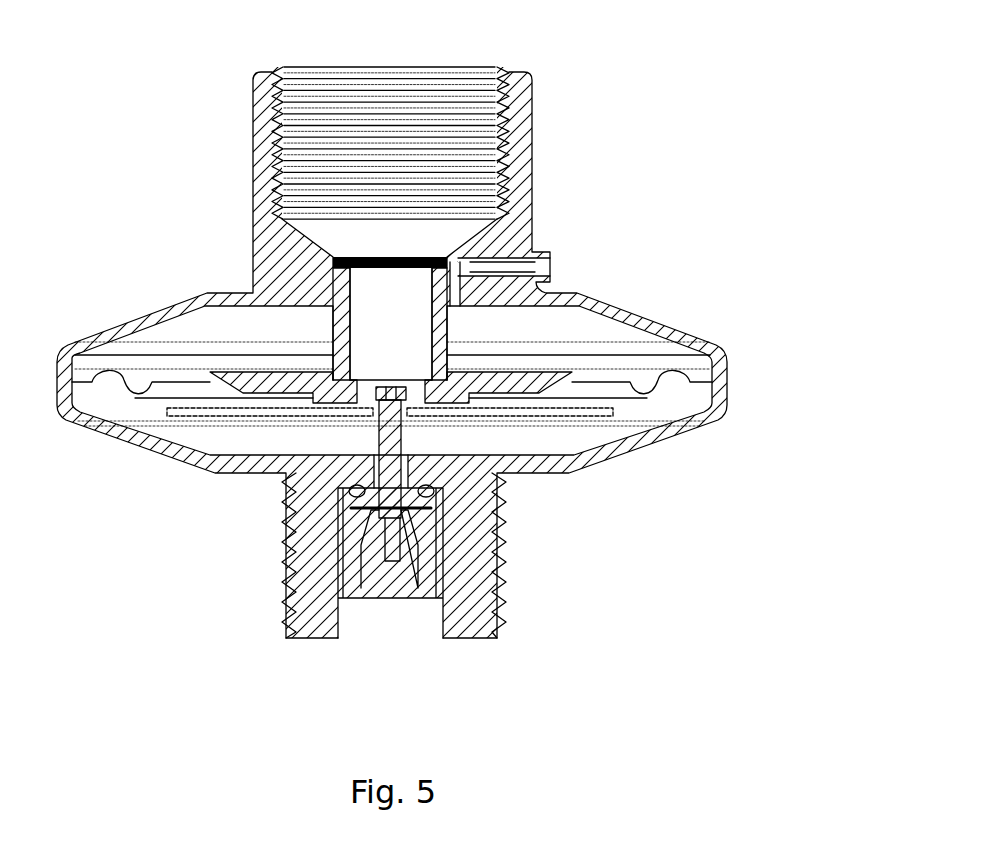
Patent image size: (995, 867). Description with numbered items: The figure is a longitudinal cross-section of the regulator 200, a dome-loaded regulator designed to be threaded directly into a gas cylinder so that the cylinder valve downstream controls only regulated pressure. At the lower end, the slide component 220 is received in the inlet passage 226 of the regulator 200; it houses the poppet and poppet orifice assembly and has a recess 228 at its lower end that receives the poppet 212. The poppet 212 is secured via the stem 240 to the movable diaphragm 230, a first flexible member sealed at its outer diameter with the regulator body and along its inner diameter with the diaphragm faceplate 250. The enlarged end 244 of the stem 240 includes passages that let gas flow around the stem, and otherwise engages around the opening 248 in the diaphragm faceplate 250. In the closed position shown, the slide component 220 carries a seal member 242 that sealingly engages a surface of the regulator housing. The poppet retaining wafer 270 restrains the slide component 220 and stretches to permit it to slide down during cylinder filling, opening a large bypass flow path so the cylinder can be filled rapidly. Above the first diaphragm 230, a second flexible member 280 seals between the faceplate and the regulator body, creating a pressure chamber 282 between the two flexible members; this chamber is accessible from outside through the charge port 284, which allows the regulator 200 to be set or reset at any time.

The regulator 200 is at (658, 268).
The poppet retaining wafer 270 is at (497, 84).
The second flexible member 280 is at (368, 262).
The charge port 284 is at (557, 253).
The pressure chamber 282 is at (182, 340).
The diaphragm faceplate 250 is at (350, 327).
The opening 248 is at (390, 378).
The movable diaphragm 230 is at (685, 378).
The enlarged end 244 is at (362, 403).
The stem 240 is at (401, 447).
The seal member 242 is at (340, 489).
The recess 228 is at (350, 582).
The slide component 220 is at (434, 568).
The poppet 212 is at (397, 588).
The inlet passage 226 is at (338, 618).